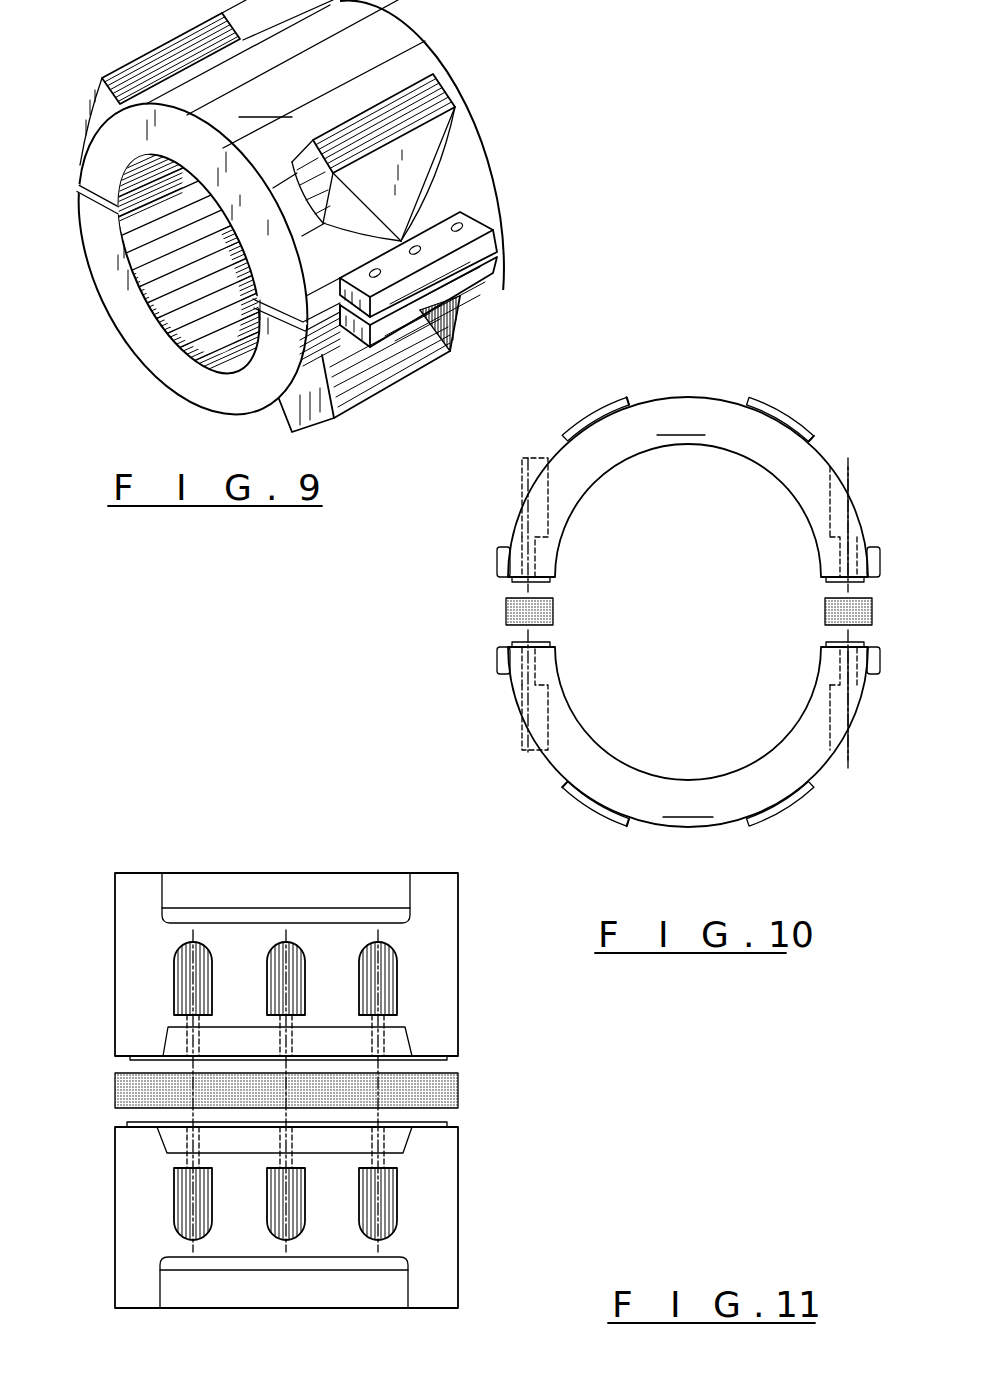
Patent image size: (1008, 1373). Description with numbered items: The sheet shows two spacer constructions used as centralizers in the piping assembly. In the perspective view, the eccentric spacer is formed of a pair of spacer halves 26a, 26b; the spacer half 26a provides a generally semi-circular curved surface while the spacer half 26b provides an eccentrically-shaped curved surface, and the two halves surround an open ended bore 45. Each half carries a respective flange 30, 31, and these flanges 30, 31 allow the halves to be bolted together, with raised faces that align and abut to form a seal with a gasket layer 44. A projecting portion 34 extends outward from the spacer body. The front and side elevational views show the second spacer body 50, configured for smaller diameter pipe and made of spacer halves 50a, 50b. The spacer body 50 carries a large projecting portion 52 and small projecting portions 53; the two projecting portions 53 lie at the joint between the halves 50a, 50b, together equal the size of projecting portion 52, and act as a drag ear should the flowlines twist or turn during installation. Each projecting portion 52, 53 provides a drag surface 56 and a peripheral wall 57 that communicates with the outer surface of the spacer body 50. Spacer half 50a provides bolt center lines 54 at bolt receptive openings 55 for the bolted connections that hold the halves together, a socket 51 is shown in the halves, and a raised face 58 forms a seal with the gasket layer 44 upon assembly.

In FIG. 9, the spacer half 26a is at (288, 225).
In FIG. 9, the spacer half 26b is at (212, 386).
In FIG. 9, the flange 30 is at (473, 226).
In FIG. 9, the flange 31 is at (483, 273).
In FIG. 9, the projecting portion 34 is at (180, 57).
In FIG. 9, the open ended bore 45 is at (177, 295).
In FIG. 10, the gasket layer 44 is at (506, 610).
In FIG. 11, the gasket layer 44 is at (460, 1090).
In FIG. 10, the spacer body 50 is at (688, 580).
In FIG. 10, the spacer half 50a is at (688, 489).
In FIG. 11, the spacer half 50a is at (458, 1008).
In FIG. 10, the spacer half 50b is at (688, 734).
In FIG. 11, the spacer half 50b is at (460, 1278).
In FIG. 10, the socket 51 is at (542, 483).
In FIG. 11, the socket 51 is at (267, 975).
In FIG. 10, the large projecting portion 52 is at (583, 412).
In FIG. 11, the large projecting portion 52 is at (280, 888).
In FIG. 10, the small projecting portion 53 is at (498, 558).
In FIG. 11, the small projecting portion 53 is at (158, 1042).
In FIG. 10, the bolt center line 54 is at (848, 472).
In FIG. 10, the opening 55 is at (535, 557).
In FIG. 10, the drag surface 56 is at (803, 423).
In FIG. 10, the peripheral wall 57 is at (633, 402).
In FIG. 11, the raised face 58 is at (445, 1062).